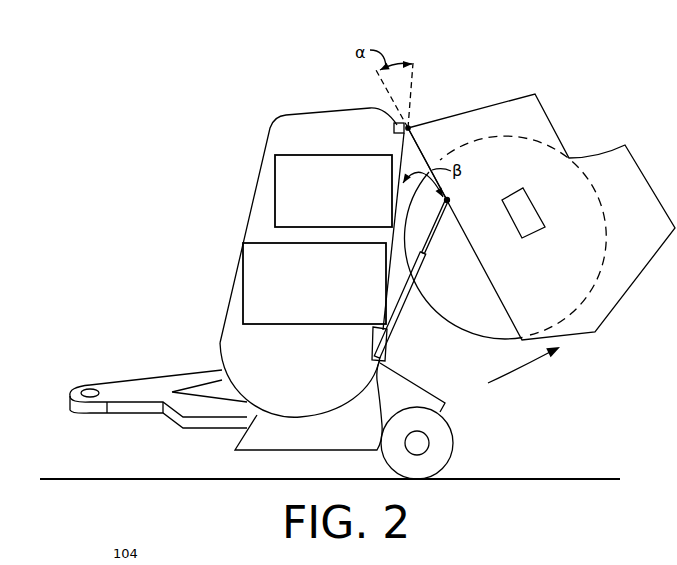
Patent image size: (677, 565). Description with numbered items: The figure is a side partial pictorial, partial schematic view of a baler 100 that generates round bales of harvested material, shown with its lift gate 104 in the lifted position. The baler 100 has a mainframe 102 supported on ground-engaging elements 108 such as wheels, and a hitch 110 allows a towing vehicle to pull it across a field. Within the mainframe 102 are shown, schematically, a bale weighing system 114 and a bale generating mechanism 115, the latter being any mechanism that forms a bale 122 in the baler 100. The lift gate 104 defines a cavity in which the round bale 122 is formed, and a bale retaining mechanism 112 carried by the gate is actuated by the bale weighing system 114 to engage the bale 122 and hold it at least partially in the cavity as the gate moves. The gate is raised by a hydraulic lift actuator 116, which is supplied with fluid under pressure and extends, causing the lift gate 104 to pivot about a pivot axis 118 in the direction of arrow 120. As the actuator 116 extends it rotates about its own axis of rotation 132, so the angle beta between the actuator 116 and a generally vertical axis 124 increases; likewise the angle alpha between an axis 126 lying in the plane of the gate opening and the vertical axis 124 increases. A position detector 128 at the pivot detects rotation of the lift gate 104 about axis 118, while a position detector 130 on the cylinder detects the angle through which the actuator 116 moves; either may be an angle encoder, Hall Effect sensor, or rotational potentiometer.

The baler 100 is at (631, 111).
The mainframe 102 is at (222, 348).
The lift gate 104 is at (549, 113).
The ground-engaging elements 108 is at (448, 468).
The hitch 110 is at (92, 385).
The bale retaining mechanism 112 is at (525, 237).
The bale weighing system 114 is at (275, 193).
The bale generating mechanism 115 is at (243, 288).
The lift actuator 116 is at (387, 340).
The pivot axis 118 is at (410, 126).
The arrow 120 is at (518, 373).
The round bale 122 is at (506, 237).
The vertical axis 124 is at (413, 87).
The axis 126 is at (389, 94).
The position detector 128 is at (396, 128).
The position detector 130 is at (377, 328).
The axis of rotation 132 is at (380, 365).